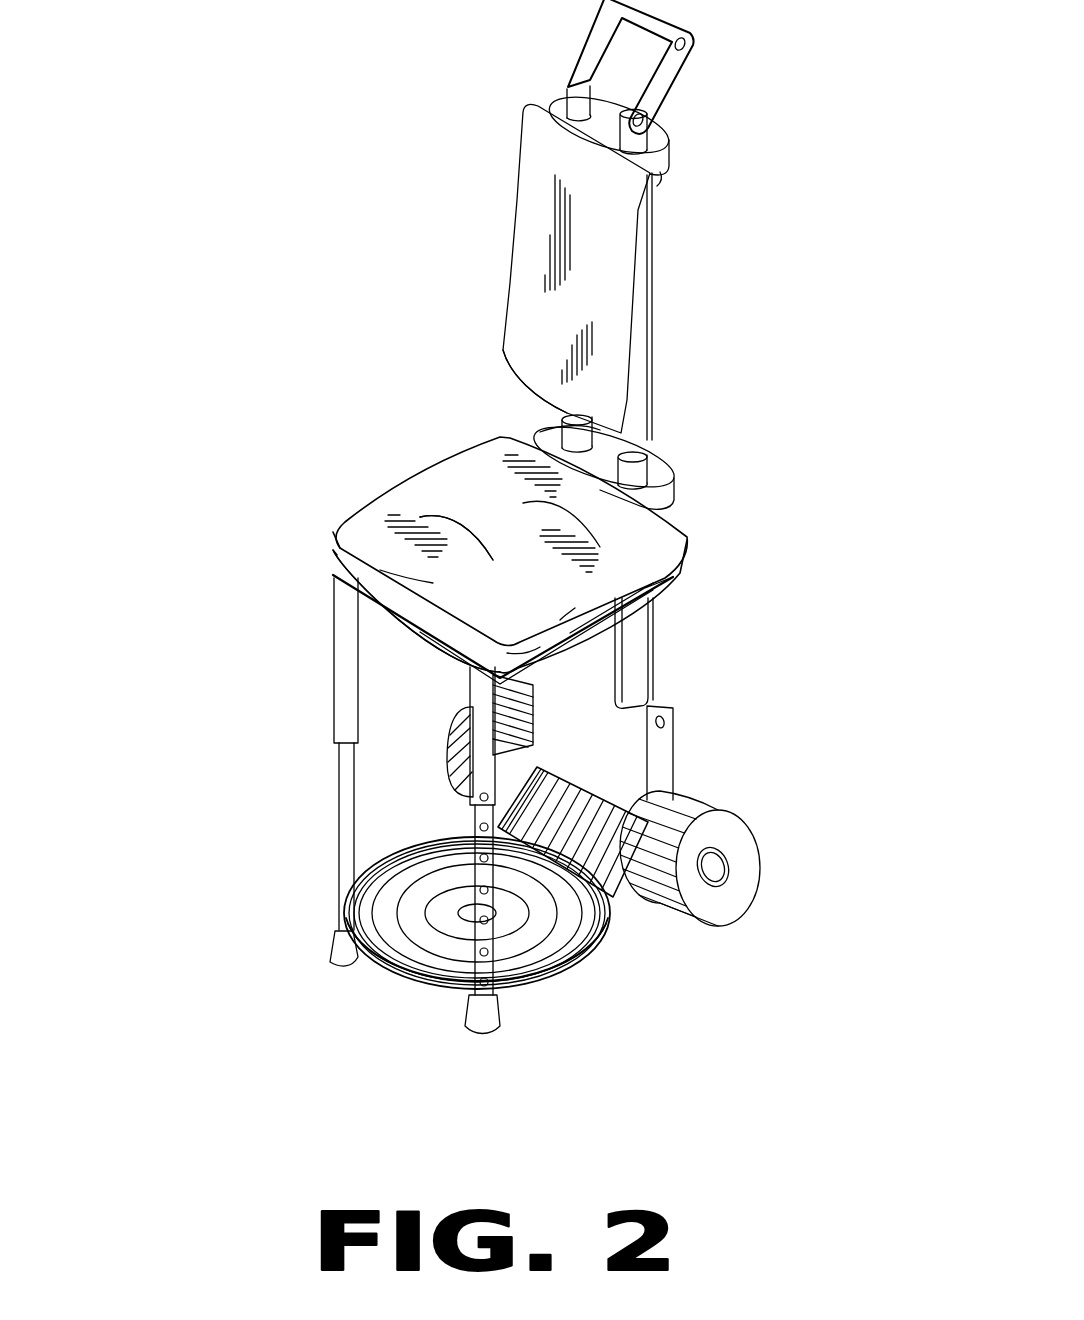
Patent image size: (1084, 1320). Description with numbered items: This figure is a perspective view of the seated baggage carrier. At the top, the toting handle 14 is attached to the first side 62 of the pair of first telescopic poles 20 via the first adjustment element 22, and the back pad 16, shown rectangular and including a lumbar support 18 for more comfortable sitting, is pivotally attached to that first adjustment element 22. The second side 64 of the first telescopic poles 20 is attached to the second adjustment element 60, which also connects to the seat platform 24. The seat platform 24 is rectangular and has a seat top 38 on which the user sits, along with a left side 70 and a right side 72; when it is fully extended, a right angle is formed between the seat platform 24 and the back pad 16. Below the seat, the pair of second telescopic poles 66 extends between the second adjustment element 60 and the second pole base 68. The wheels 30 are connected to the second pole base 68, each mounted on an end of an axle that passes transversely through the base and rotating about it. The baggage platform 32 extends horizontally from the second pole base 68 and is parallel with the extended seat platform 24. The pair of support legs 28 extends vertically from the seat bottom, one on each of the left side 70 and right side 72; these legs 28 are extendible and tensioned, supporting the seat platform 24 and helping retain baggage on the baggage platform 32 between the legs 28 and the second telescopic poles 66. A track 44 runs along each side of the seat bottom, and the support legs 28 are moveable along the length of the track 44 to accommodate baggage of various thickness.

The toting handle 14 is at (633, 20).
The back pad 16 is at (536, 188).
The lumbar support 18 is at (515, 348).
The pair of first telescopic poles 20 is at (585, 432).
The first adjustment element 22 is at (668, 152).
The first side 62 is at (657, 187).
The second side 64 is at (655, 440).
The second adjustment element 60 is at (716, 497).
The left side 70 is at (477, 477).
The seat top 38 is at (402, 501).
The seat platform 24 is at (355, 530).
The track 44 is at (688, 558).
The pair of second telescopic poles 66 is at (655, 627).
The support legs 28 is at (347, 712).
The wheels 30 is at (718, 795).
The second pole base 68 is at (668, 708).
The right side 72 is at (565, 628).
The baggage platform 32 is at (522, 966).